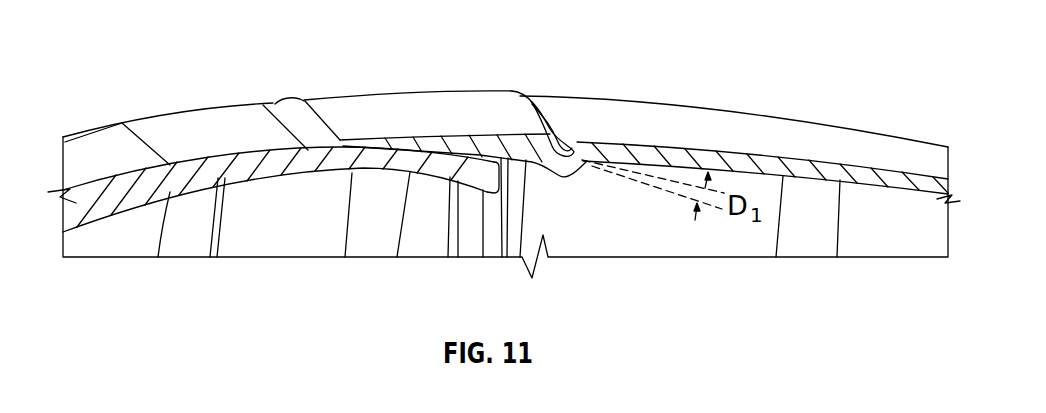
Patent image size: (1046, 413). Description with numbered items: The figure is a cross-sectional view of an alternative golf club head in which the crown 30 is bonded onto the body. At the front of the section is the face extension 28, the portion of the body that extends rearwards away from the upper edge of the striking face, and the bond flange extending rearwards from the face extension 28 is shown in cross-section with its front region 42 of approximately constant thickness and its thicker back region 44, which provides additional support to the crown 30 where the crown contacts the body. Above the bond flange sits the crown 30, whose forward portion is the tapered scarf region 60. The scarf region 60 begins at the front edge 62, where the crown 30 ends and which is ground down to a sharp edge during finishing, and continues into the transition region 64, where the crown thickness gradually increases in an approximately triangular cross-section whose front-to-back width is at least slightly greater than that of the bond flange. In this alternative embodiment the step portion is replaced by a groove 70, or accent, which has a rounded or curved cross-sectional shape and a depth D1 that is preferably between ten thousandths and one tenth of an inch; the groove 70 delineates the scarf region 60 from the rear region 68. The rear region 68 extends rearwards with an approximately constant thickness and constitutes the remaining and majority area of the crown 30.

The face extension 28 is at (147, 122).
The crown 30 is at (750, 106).
The front region 42 is at (347, 160).
The back region 44 is at (483, 182).
The tapered scarf region 60 is at (432, 97).
The front edge 62 is at (296, 95).
The transition region 64 is at (363, 112).
The rear region 68 is at (867, 128).
The groove 70 is at (541, 96).